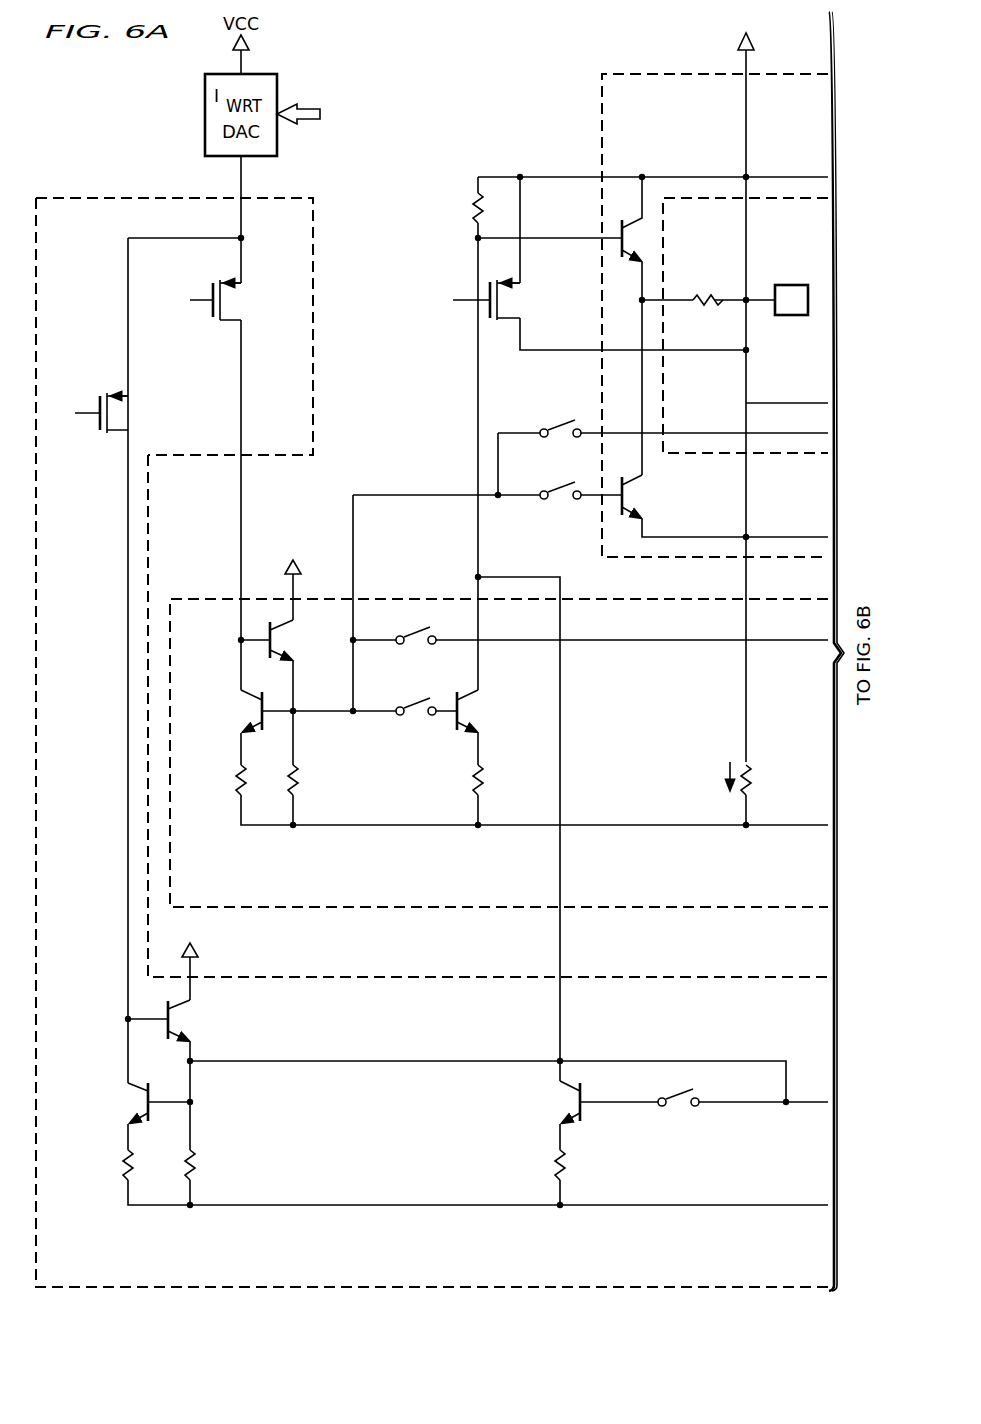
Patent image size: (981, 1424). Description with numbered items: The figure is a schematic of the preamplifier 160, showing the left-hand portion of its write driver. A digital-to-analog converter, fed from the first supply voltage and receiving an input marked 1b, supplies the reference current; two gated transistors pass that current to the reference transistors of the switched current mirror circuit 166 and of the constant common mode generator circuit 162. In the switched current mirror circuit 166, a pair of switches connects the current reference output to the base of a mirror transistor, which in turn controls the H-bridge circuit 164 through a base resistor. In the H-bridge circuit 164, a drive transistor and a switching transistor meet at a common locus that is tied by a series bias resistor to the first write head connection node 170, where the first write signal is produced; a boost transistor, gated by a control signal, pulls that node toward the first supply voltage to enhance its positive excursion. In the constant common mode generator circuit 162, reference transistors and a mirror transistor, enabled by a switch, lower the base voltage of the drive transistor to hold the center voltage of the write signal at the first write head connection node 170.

The preamplifier 160 is at (144, 103).
The constant common mode generator circuit 162 is at (313, 393).
The H-bridge circuit 164 is at (601, 112).
The switched current mirror circuit 166 is at (288, 908).
The first write head connection node 170 is at (764, 287).
The DAC input bit 1b is at (298, 103).